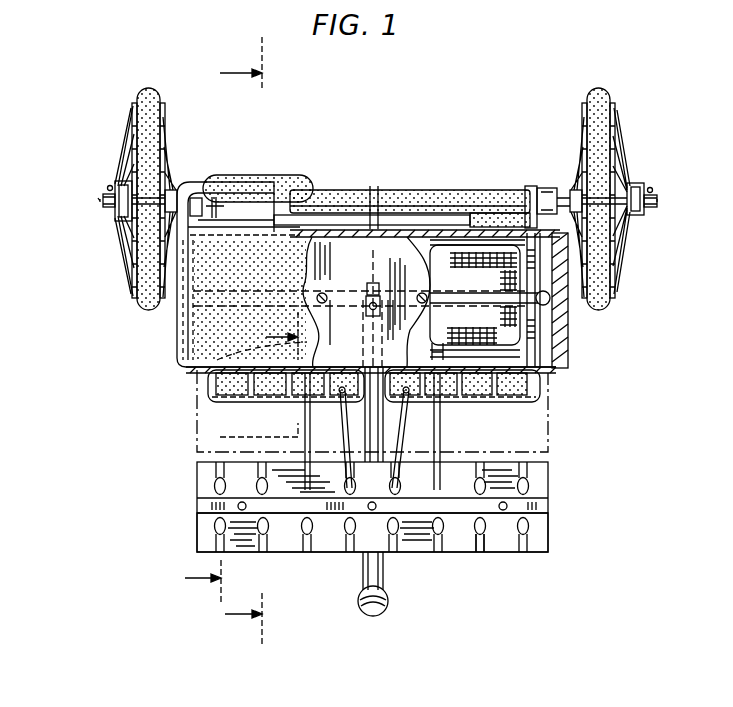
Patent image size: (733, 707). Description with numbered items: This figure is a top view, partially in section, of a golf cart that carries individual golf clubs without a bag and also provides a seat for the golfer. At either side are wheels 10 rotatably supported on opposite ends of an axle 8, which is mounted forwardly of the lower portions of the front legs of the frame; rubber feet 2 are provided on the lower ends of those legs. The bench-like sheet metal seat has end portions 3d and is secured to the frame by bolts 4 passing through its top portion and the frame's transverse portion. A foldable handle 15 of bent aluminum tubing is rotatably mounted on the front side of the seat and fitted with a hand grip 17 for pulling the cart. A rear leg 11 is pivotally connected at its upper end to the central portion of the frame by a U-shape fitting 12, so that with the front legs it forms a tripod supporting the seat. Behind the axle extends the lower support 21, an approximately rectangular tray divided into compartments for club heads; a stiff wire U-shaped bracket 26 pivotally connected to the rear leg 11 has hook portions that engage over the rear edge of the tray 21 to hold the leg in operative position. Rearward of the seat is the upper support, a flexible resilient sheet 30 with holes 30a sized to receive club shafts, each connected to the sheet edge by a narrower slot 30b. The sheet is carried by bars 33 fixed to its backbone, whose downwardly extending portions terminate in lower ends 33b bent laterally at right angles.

The rubber feet 2 is at (241, 345).
The bolts 4 is at (241, 462).
The axle 8 is at (103, 200).
The wheels 10 is at (137, 101).
The rear leg 11 is at (384, 574).
The U-shape fitting 12 is at (378, 266).
The handle 15 is at (196, 182).
The hand grip 17 is at (266, 150).
The end portions 3d is at (572, 328).
The lower support 21 is at (542, 398).
The U-shaped bracket 26 is at (402, 424).
The sheet 30 is at (548, 495).
The holes 30a is at (532, 527).
The slots 30b is at (485, 552).
The bars 33 is at (302, 420).
The lower ends 33b is at (443, 350).